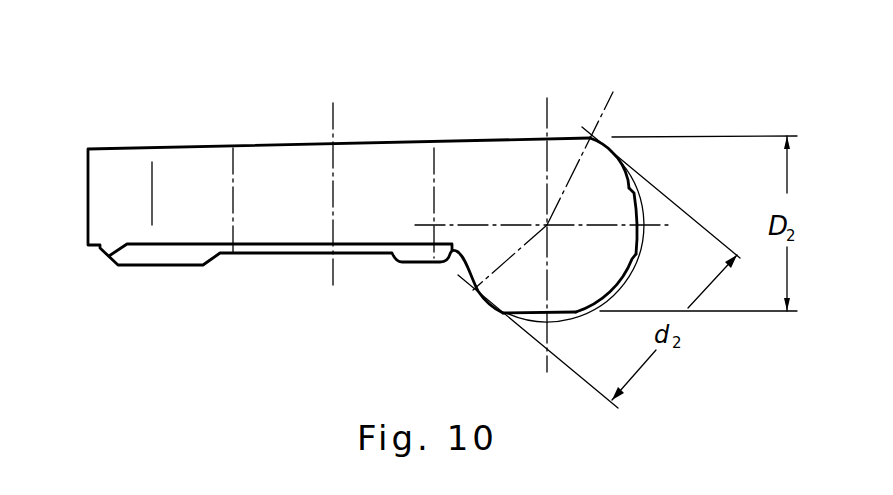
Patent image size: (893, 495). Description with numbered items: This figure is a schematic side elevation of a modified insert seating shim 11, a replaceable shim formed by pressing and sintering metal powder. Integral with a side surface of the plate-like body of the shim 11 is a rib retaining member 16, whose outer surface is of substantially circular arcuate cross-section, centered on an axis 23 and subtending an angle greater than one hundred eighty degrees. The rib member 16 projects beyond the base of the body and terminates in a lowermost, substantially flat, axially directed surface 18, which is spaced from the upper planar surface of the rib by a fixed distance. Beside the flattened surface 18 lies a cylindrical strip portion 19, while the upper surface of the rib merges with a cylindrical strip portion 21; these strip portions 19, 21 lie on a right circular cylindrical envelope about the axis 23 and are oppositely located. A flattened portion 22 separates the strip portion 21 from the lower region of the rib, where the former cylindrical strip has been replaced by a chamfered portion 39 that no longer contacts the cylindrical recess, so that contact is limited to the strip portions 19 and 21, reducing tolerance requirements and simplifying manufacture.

The insert seating shim 11 is at (388, 131).
The rib retaining member 16 is at (567, 228).
The lowermost flat axially directed surface 18 is at (537, 318).
The cylindrical strip portion 19 is at (486, 306).
The cylindrical strip portion 21 is at (611, 152).
The flattened portion 22 is at (637, 243).
The axis 23 is at (545, 223).
The chamfered portion 39 is at (610, 289).